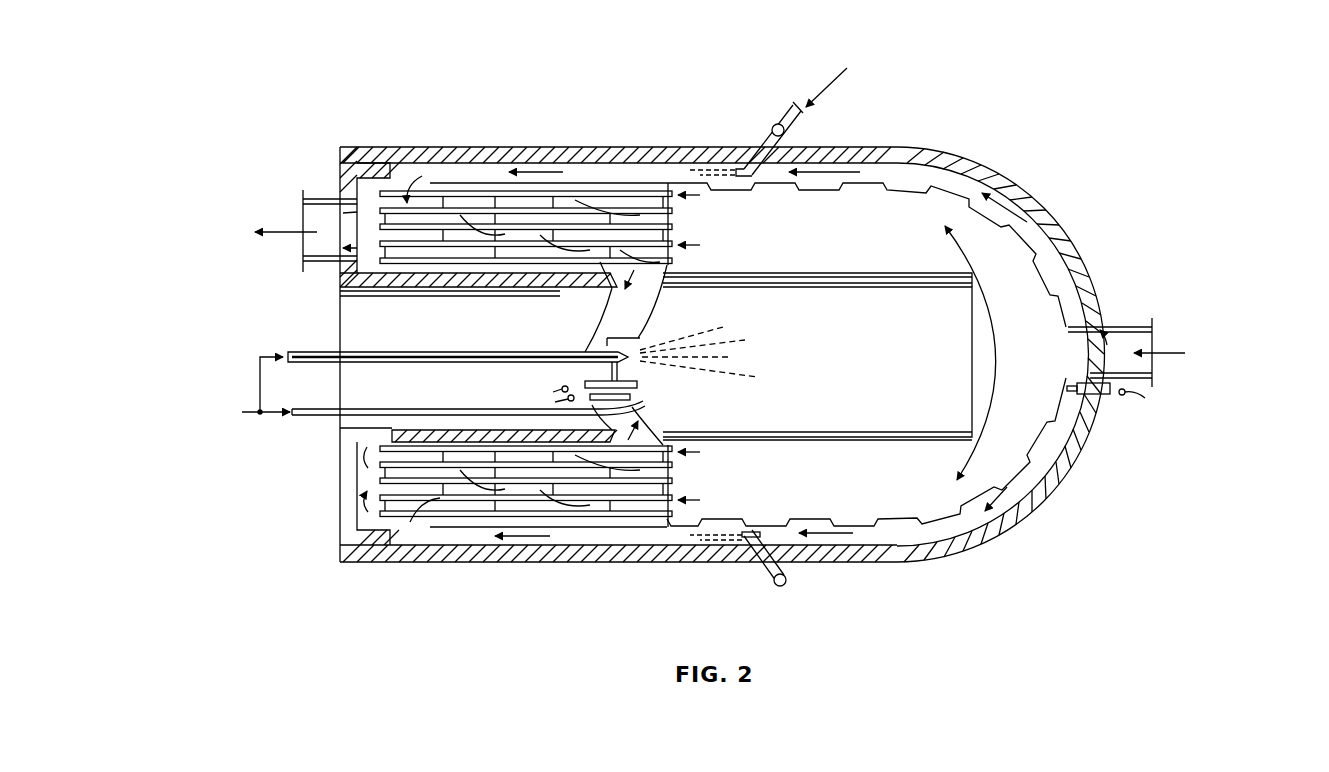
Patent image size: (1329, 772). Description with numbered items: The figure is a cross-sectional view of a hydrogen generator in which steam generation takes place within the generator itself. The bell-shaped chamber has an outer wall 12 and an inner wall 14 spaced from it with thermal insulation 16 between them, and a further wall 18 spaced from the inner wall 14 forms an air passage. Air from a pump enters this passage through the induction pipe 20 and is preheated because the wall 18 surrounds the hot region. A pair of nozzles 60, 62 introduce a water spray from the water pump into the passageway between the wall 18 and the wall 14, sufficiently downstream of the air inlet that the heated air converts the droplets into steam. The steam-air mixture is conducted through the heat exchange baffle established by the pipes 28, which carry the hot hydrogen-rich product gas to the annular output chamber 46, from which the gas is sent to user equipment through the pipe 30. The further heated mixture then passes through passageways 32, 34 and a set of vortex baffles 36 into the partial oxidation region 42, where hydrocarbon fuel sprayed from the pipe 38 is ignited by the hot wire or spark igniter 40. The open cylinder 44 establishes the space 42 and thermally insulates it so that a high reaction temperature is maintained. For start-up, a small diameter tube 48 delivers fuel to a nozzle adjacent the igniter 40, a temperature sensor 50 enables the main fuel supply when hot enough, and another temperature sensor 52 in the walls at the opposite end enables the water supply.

The outer wall 12 is at (870, 148).
The inner wall 14 is at (867, 178).
The thermal insulation 16 is at (977, 167).
The wall 18 is at (763, 186).
The induction pipe 20 is at (1120, 326).
The pipes 28 is at (582, 191).
The pipe 30 is at (322, 199).
The passageway 32 is at (603, 308).
The passageway 34 is at (590, 371).
The vortex baffles 36 is at (643, 330).
The pipe 38 is at (455, 352).
The hot wire or spark igniter 40 is at (641, 385).
The partial oxidation region 42 is at (878, 366).
The open cylinder 44 is at (848, 272).
The output chamber 46 is at (366, 270).
The small diameter tube 48 is at (418, 409).
The temperature sensor 50 is at (642, 398).
The temperature sensor 52 is at (1108, 395).
The nozzle 60 is at (772, 137).
The nozzle 62 is at (768, 572).